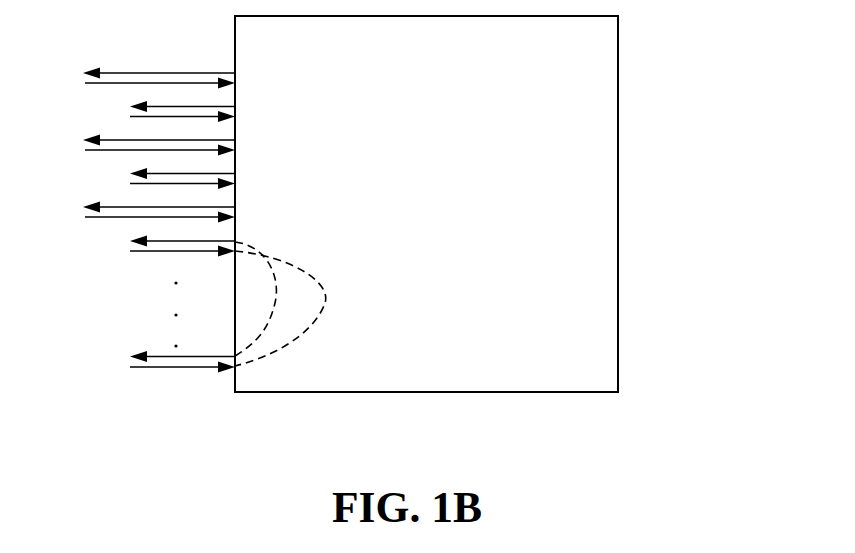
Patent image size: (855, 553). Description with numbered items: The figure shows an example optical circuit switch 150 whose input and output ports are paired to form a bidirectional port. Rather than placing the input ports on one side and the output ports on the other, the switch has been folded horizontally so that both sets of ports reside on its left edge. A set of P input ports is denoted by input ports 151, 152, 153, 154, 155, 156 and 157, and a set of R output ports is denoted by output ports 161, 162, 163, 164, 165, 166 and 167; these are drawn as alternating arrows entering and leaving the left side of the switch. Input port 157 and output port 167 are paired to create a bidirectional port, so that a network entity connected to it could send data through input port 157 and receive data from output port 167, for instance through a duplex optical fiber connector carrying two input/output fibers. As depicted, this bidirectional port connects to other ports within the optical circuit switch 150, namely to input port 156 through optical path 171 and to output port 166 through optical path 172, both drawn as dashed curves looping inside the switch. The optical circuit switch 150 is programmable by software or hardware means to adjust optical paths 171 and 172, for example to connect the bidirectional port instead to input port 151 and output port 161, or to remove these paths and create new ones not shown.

The optical circuit switch 150 is at (599, 377).
The input port 151 is at (81, 99).
The input port 152 is at (124, 130).
The input port 153 is at (81, 166).
The input port 154 is at (124, 197).
The input port 155 is at (81, 233).
The input port 156 is at (124, 265).
The input port 157 is at (126, 381).
The output port 161 is at (81, 80).
The output port 162 is at (124, 112).
The output port 163 is at (81, 147).
The output port 164 is at (124, 179).
The output port 165 is at (81, 214).
The output port 166 is at (124, 247).
The output port 167 is at (126, 363).
The optical path 171 is at (271, 264).
The optical path 172 is at (319, 347).